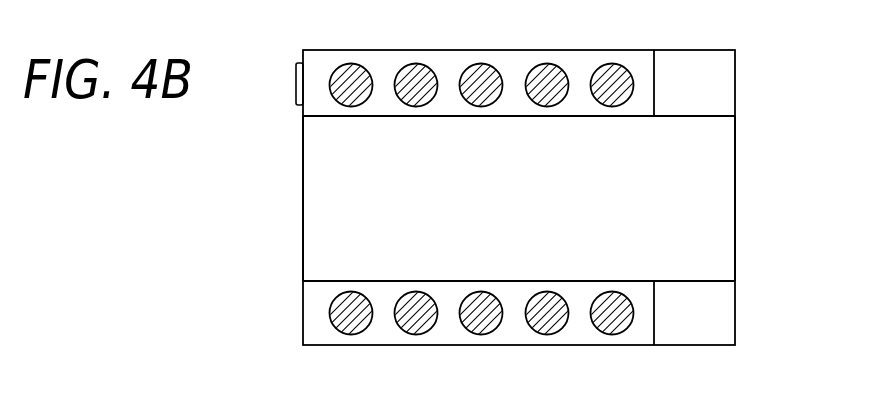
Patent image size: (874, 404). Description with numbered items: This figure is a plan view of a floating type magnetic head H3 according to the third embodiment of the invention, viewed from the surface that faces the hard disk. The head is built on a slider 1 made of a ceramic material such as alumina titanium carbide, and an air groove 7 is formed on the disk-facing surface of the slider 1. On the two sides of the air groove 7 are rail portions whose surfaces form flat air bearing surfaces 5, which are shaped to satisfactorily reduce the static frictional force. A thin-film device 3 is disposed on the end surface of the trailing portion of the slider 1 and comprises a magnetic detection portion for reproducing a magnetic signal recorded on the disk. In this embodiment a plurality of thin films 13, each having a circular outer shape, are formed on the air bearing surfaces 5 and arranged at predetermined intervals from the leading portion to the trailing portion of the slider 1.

The slider 1 is at (290, 202).
The thin-film device 3 is at (298, 90).
The air bearing surfaces 5 is at (323, 58).
The air groove 7 is at (312, 254).
The thin films 13 is at (407, 68).
The magnetic head H3 is at (750, 210).